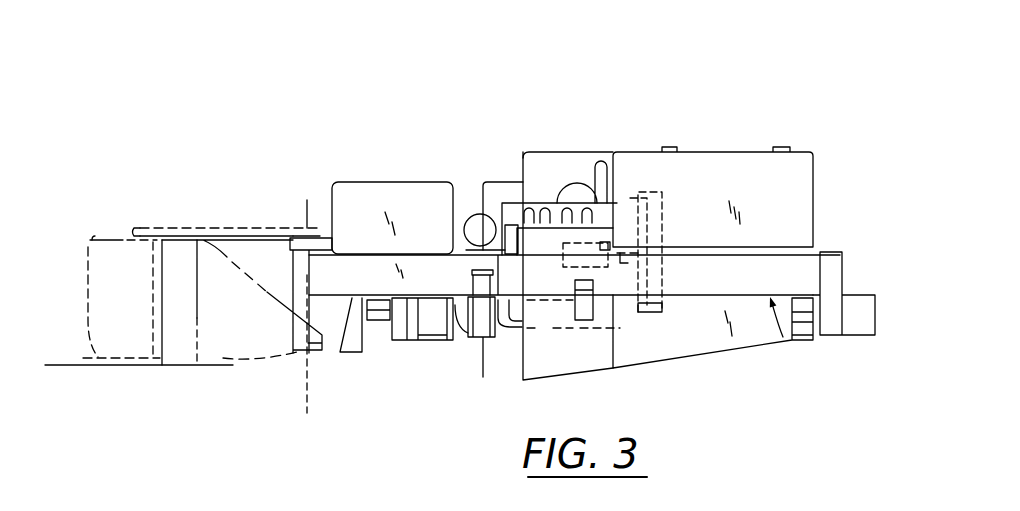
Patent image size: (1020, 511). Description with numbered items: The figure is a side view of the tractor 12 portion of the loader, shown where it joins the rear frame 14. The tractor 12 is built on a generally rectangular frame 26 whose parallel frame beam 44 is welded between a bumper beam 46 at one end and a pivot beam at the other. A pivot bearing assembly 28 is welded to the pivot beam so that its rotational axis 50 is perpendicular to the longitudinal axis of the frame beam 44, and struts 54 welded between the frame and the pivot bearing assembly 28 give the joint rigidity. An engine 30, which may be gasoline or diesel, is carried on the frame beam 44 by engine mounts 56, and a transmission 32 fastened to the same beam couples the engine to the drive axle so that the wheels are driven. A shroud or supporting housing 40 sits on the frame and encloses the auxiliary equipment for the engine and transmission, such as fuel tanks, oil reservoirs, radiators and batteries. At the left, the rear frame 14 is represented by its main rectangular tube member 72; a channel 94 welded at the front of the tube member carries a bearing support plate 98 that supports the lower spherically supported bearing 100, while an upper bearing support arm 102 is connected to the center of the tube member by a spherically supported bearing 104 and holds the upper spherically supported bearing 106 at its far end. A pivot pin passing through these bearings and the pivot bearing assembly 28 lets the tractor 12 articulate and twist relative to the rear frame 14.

The tractor 12 is at (683, 383).
The rear frame 14 is at (126, 372).
The frame 26 is at (787, 338).
The pivot bearing assembly 28 is at (326, 255).
The engine 30 is at (560, 195).
The transmission 32 is at (437, 342).
The shroud or supporting housing 40 is at (770, 194).
The frame beam 44 is at (728, 282).
The bumper beam 46 is at (840, 265).
The rotational axis 50 is at (307, 413).
The struts 54 is at (347, 348).
The engine mounts 56 is at (587, 322).
The rectangular tube member 72 is at (95, 363).
The channel 94 is at (173, 363).
The bearing support plate 98 is at (232, 363).
The lower spherically supported bearing 100 is at (297, 355).
The upper bearing support arm 102 is at (202, 227).
The spherically supported bearing 104 is at (130, 237).
The upper spherically supported bearing 106 is at (290, 236).